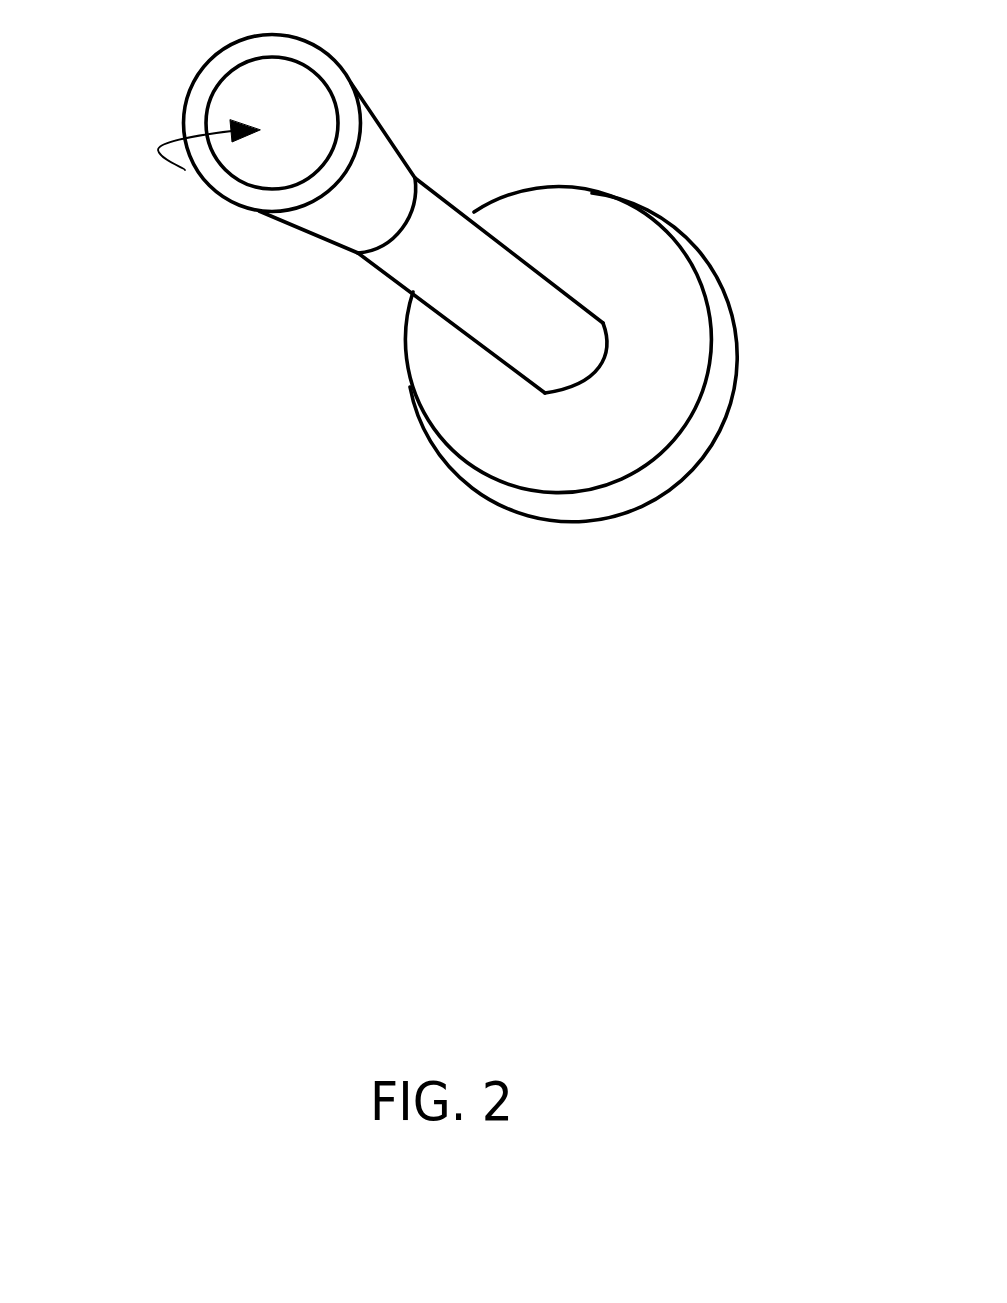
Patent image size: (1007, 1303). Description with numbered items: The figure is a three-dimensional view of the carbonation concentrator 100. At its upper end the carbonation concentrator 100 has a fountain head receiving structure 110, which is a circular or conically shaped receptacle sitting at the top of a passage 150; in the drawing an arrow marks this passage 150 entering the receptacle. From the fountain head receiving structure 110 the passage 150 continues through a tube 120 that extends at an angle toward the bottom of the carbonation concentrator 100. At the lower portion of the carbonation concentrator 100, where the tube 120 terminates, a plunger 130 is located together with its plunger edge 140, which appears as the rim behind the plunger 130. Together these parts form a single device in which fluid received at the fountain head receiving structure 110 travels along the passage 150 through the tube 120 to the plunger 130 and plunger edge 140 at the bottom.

The carbonation concentrator 100 is at (735, 156).
The fountain head receiving structure 110 is at (368, 143).
The tube 120 is at (438, 225).
The plunger 130 is at (665, 382).
The plunger edge 140 is at (622, 495).
The passage 150 is at (185, 170).